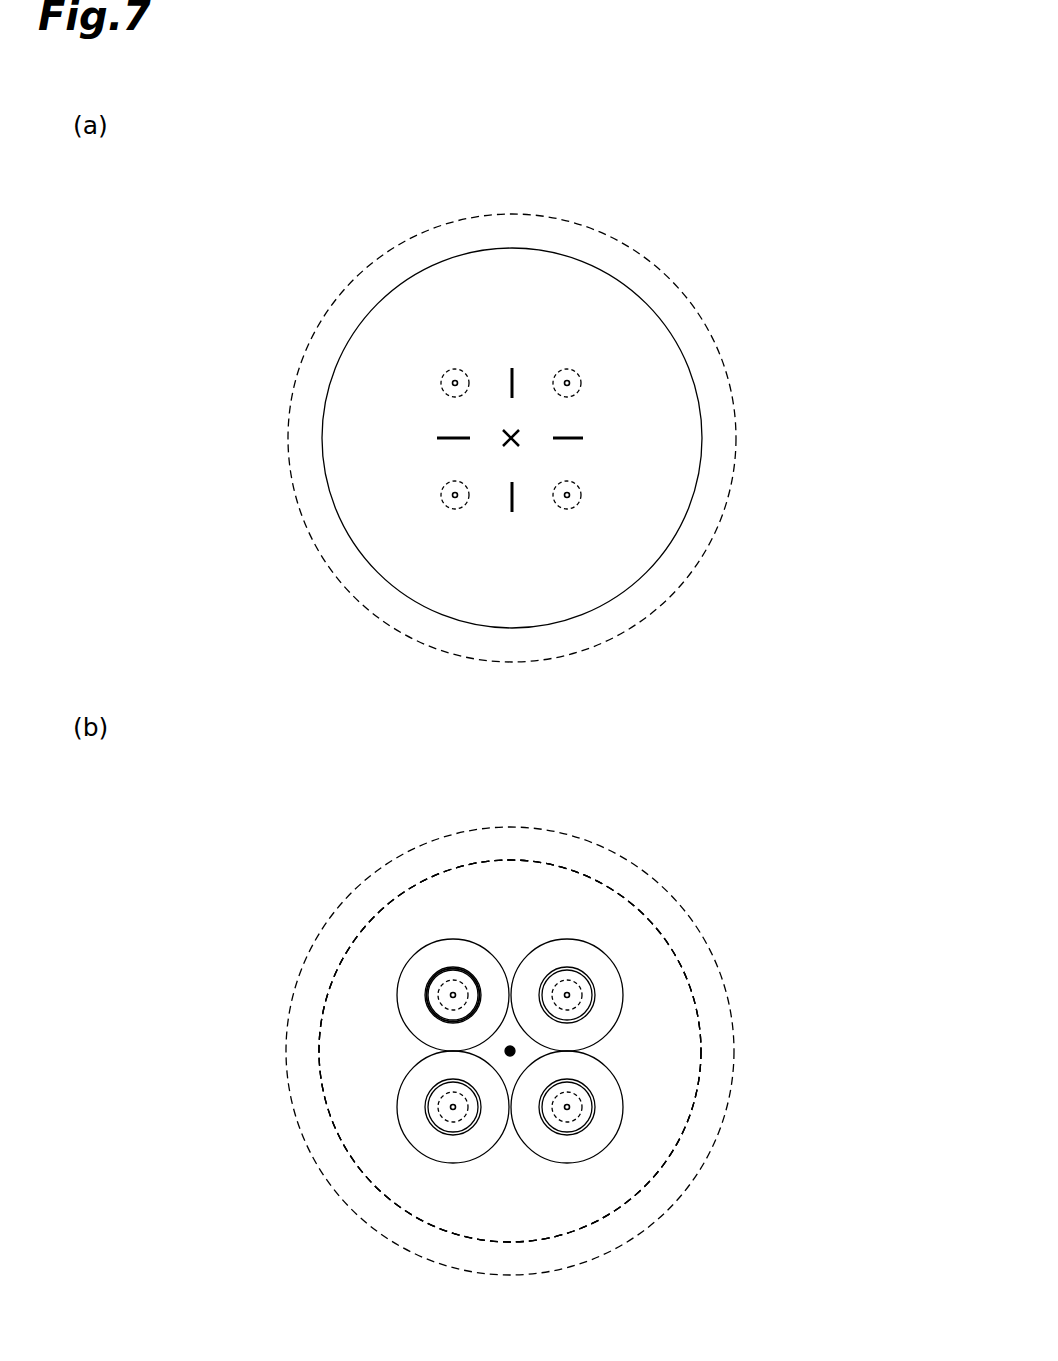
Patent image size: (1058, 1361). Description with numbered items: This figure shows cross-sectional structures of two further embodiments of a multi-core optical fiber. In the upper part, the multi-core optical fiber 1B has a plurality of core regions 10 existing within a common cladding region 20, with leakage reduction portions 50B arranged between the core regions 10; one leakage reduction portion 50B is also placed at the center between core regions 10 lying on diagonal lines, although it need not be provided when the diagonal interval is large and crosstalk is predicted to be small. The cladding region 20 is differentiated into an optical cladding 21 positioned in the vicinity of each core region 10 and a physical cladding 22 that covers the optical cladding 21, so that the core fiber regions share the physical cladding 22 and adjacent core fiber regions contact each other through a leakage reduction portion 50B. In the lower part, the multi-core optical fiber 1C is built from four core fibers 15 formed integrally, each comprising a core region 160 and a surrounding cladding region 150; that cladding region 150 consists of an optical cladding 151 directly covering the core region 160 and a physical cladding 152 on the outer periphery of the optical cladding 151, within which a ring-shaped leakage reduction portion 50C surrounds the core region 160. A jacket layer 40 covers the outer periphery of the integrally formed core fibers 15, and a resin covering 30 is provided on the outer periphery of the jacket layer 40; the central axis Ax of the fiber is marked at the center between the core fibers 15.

The multi-core optical fiber 1B is at (683, 252).
The multi-core optical fiber 1C is at (683, 864).
The core region 10 is at (455, 498).
The core fiber 15 is at (414, 951).
The cladding region 20 is at (233, 335).
The optical cladding 21 is at (447, 390).
The physical cladding 22 is at (410, 352).
The resin covering 30 is at (575, 237).
The jacket layer 40 is at (655, 1100).
The leakage reduction portion 50B is at (513, 381).
The leakage reduction portion 50C is at (468, 976).
The cladding region 150 is at (170, 945).
The optical cladding 151 is at (433, 1015).
The physical cladding 152 is at (443, 988).
The core region 160 is at (453, 992).
The central axis Ax is at (512, 1049).